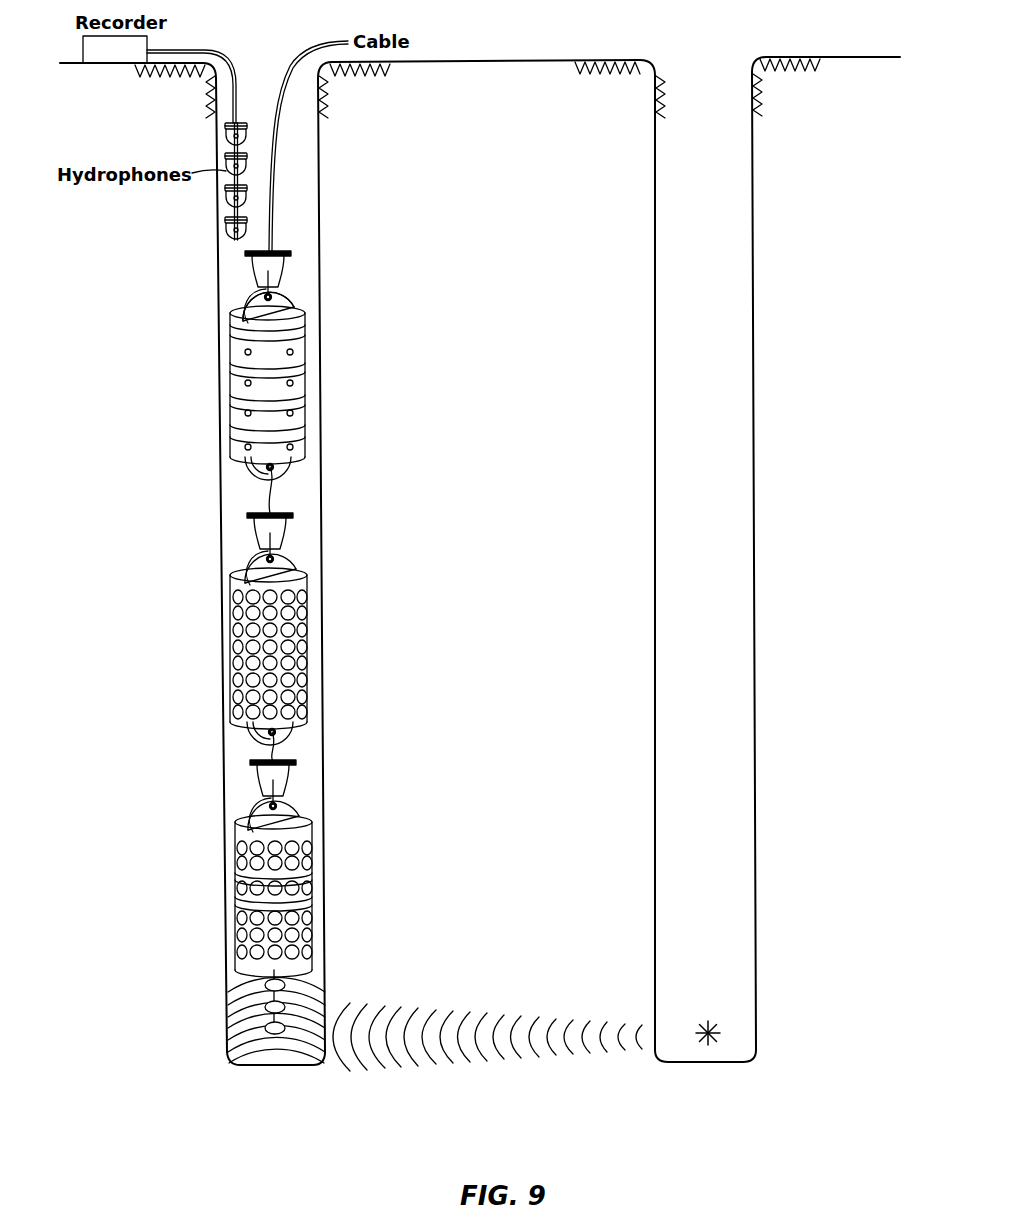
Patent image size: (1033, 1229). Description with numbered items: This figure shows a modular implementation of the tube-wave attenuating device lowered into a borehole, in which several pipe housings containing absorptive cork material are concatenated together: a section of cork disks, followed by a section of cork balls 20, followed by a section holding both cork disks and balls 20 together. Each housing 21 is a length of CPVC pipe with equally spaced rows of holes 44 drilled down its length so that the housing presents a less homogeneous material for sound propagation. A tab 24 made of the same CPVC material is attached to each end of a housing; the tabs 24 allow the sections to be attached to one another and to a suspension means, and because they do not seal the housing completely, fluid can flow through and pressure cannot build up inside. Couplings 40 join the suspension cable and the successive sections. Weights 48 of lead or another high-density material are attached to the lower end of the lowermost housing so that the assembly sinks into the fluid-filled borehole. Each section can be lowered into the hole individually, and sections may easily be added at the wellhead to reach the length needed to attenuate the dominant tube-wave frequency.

The cork balls 20 is at (232, 633).
The tool housing 21 is at (237, 385).
The tab 24 is at (236, 320).
The cable coupling shackle 40 is at (296, 306).
The holes 44 is at (232, 425).
The weights 48 is at (266, 1007).